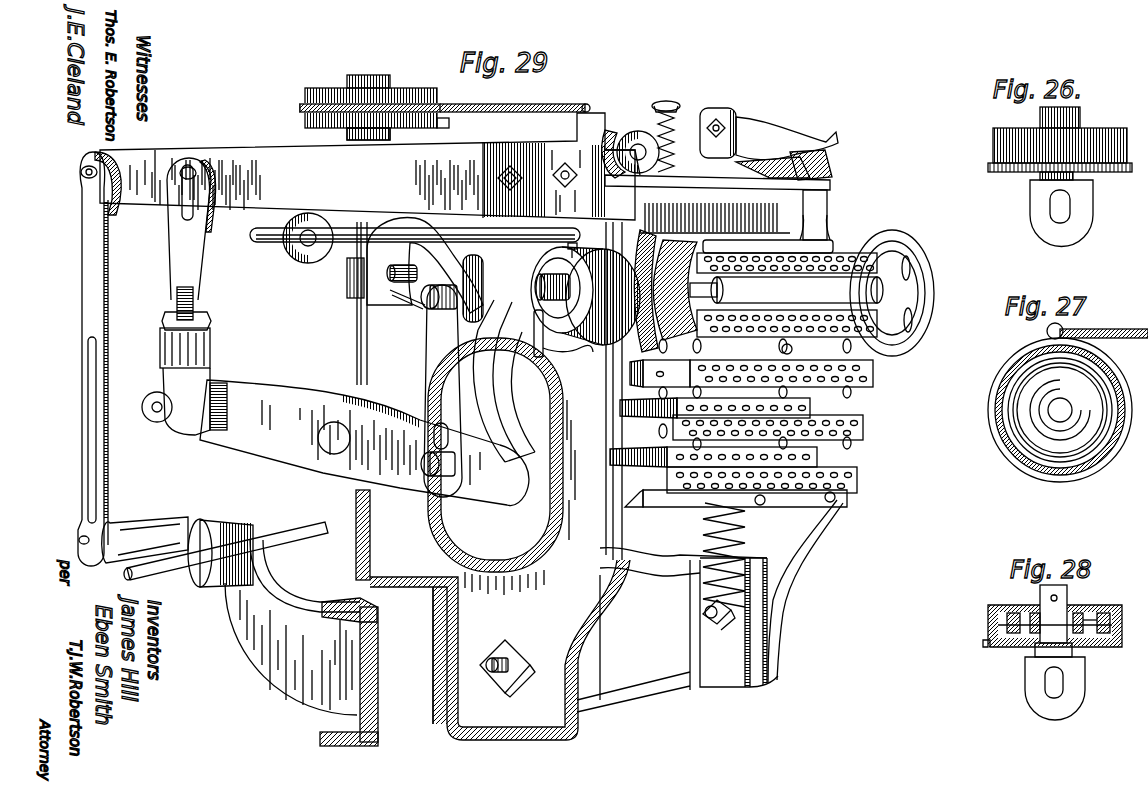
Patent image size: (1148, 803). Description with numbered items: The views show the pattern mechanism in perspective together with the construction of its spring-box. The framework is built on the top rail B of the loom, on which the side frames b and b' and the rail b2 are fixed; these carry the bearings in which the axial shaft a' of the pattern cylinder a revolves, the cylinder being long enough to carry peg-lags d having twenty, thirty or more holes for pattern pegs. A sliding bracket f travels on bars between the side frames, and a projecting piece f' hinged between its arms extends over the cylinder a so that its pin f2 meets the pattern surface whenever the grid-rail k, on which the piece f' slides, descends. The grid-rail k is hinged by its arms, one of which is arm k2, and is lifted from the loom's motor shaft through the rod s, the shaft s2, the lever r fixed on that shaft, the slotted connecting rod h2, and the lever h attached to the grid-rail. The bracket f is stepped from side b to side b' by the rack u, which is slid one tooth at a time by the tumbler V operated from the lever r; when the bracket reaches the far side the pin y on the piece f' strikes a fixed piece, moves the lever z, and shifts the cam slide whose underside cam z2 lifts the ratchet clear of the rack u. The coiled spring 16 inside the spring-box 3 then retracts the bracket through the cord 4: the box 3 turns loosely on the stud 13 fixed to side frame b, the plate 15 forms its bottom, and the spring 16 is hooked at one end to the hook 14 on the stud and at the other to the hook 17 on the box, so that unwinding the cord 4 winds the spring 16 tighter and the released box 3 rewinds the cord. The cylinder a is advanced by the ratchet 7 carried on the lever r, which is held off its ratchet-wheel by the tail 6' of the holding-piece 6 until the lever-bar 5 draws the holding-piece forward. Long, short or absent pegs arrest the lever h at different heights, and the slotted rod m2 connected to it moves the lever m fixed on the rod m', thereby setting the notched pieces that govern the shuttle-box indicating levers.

In FIG. 29, the spring-box 3 is at (333, 90).
In FIG. 26, the spring-box 3 is at (1147, 136).
In FIG. 27, the spring-box 3 is at (1127, 437).
In FIG. 28, the spring-box 3 is at (987, 620).
In FIG. 29, the cord 4 is at (520, 104).
In FIG. 27, the cord 4 is at (1140, 329).
In FIG. 29, the stud 13 is at (347, 136).
In FIG. 26, the stud 13 is at (1075, 213).
In FIG. 27, the stud 13 is at (1060, 410).
In FIG. 28, the stud 13 is at (1037, 680).
In FIG. 27, the hook 14 is at (1042, 402).
In FIG. 28, the hook 14 is at (1035, 620).
In FIG. 28, the plate 15 is at (1107, 641).
In FIG. 27, the coiled spring 16 is at (1020, 388).
In FIG. 28, the coiled spring 16 is at (1018, 626).
In FIG. 27, the hook 17 is at (1113, 393).
In FIG. 28, the hook 17 is at (1103, 627).
In FIG. 29, the lever h is at (296, 188).
In FIG. 29, the slotted connecting rod h2 is at (183, 252).
In FIG. 29, the slotted rod m2 is at (60, 254).
In FIG. 29, the lever m is at (177, 552).
In FIG. 29, the rod m' is at (226, 563).
In FIG. 29, the holding-piece 6 is at (404, 233).
In FIG. 29, the tail 6' is at (563, 340).
In FIG. 29, the lever-bar 5 is at (310, 263).
In FIG. 29, the rack u is at (345, 300).
In FIG. 29, the tumbler V is at (425, 270).
In FIG. 29, the ratchet 7 is at (498, 407).
In FIG. 29, the lever r is at (262, 438).
In FIG. 29, the rod s is at (585, 296).
In FIG. 29, the shaft s2 is at (334, 438).
In FIG. 29, the pattern cylinder a is at (784, 293).
In FIG. 29, the axial shaft a' is at (537, 280).
In FIG. 29, the side frame b is at (561, 481).
In FIG. 29, the side frame b' is at (771, 593).
In FIG. 29, the rail b2 is at (645, 630).
In FIG. 29, the top rail B is at (360, 667).
In FIG. 29, the peg-lags d is at (853, 477).
In FIG. 29, the sliding bracket f is at (646, 139).
In FIG. 29, the projecting piece f' is at (718, 141).
In FIG. 29, the pin f2 is at (823, 216).
In FIG. 29, the grid-rail k is at (717, 191).
In FIG. 29, the arm k2 is at (773, 165).
In FIG. 29, the pin y is at (832, 160).
In FIG. 29, the lever z is at (694, 549).
In FIG. 29, the cam z2 is at (716, 632).